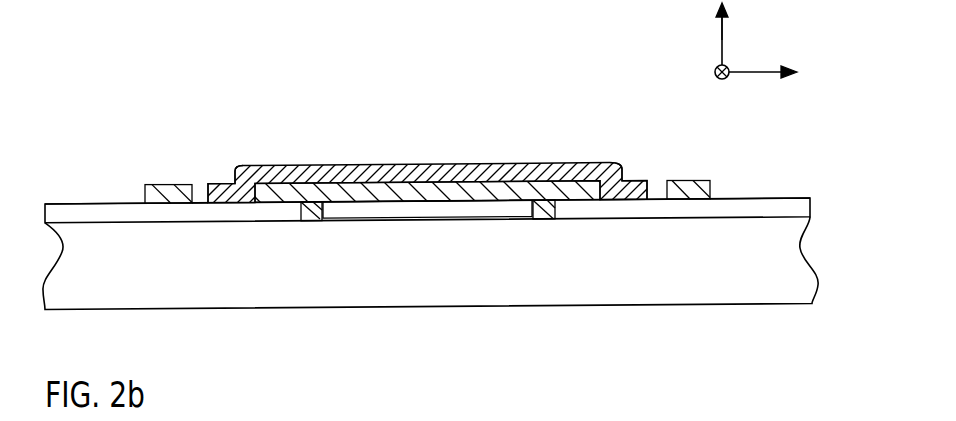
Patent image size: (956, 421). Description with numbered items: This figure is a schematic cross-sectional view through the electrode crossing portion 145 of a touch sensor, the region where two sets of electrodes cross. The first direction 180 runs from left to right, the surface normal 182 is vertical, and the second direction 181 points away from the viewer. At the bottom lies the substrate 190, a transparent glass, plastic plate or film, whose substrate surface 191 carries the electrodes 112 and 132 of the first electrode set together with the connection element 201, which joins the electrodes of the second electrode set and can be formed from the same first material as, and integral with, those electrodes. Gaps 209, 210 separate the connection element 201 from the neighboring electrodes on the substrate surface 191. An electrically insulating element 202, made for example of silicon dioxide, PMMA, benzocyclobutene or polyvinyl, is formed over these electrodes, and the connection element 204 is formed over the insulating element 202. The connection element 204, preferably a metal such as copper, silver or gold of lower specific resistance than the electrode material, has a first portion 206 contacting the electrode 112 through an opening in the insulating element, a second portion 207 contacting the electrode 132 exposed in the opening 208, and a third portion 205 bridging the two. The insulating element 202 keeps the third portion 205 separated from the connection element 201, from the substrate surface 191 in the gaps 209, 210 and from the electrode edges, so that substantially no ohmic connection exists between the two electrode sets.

The electrode 112 is at (779, 199).
The electrode 132 is at (78, 204).
The electrode crossing portion 145 is at (264, 70).
The first direction 180 is at (752, 75).
The second direction 181 is at (714, 72).
The surface normal 182 is at (722, 27).
The substrate 190 is at (180, 309).
The substrate surface 191 is at (97, 223).
The connection element 201 is at (435, 213).
The electrically insulating element 202 is at (168, 185).
The connection element 204 is at (352, 99).
The third portion 205 is at (438, 163).
The first portion 206 is at (632, 181).
The second portion 207 is at (222, 180).
The opening 208 is at (202, 184).
The gap 209 is at (538, 218).
The gap 210 is at (310, 221).